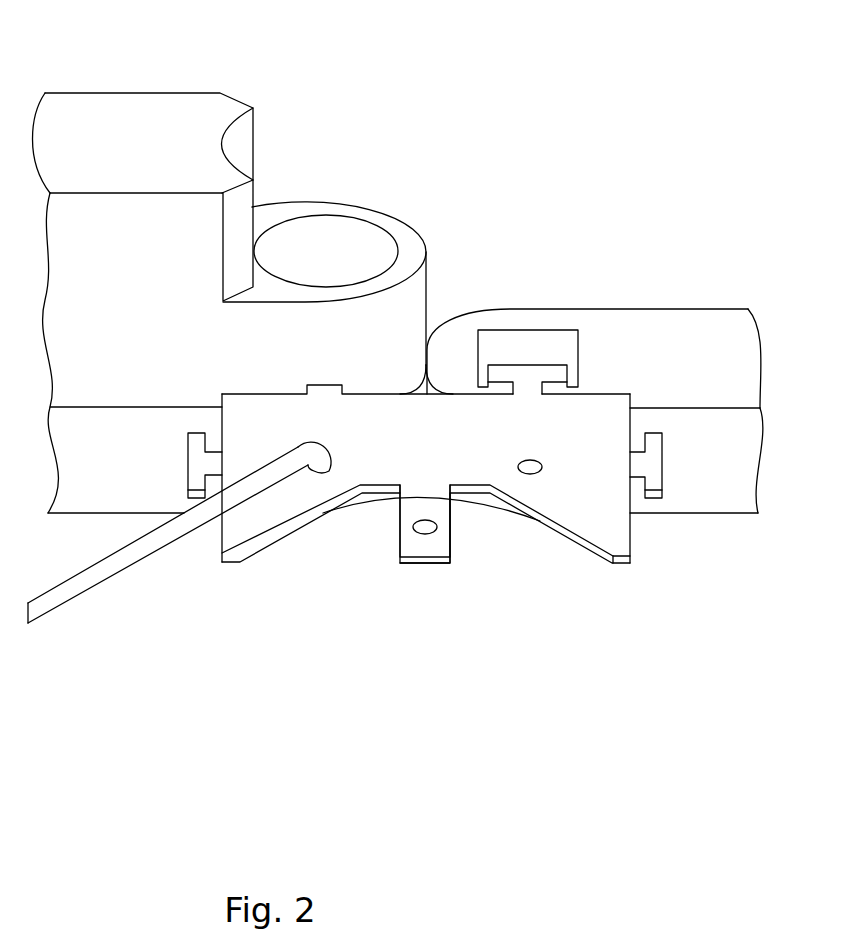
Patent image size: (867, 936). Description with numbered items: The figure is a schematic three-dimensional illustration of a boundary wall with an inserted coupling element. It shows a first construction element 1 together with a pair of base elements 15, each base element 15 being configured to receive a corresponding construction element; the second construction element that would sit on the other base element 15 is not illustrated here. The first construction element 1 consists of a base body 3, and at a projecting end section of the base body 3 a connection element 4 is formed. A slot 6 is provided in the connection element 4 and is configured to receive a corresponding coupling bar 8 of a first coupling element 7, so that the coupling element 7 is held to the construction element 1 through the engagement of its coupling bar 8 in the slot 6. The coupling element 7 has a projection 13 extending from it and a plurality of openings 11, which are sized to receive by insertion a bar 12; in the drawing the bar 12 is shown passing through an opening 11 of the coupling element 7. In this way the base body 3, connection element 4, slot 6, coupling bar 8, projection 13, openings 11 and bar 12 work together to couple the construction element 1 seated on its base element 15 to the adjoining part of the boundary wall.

The first construction element 1 is at (162, 72).
The base body 3 is at (208, 125).
The connection element 4 is at (357, 212).
The slot 6 is at (358, 375).
The first coupling element 7 is at (590, 505).
The coupling bar 8 is at (540, 377).
The opening 11 is at (530, 470).
The bar 12 is at (165, 537).
The projection 13 is at (443, 550).
The base element 15 is at (120, 460).